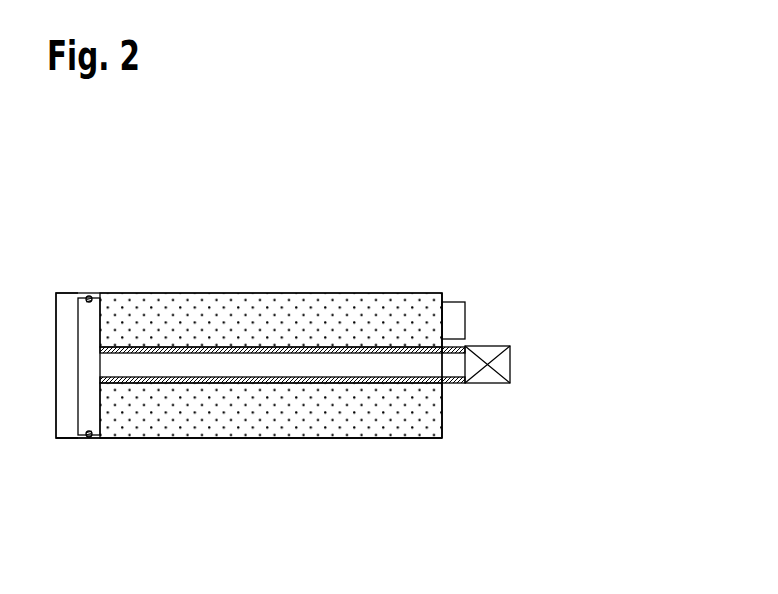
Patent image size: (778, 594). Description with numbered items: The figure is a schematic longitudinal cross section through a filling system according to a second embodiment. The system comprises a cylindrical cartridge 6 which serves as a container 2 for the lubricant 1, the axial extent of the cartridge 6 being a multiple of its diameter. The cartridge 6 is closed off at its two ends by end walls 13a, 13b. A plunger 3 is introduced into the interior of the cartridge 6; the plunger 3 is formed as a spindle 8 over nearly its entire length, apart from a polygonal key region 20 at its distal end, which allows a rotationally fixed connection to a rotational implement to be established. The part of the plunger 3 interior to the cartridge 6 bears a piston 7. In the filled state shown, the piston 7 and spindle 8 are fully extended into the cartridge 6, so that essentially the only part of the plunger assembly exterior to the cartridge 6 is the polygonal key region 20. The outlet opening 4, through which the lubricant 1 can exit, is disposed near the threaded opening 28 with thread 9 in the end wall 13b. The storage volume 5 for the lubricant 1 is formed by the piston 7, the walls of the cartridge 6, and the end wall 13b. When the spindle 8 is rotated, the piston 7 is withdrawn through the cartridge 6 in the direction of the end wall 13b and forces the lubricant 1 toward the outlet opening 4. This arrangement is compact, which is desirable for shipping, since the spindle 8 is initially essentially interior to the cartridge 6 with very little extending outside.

The lubricant 1 is at (268, 420).
The container 2 is at (240, 246).
The plunger 3 is at (494, 320).
The outlet opening 4 is at (452, 302).
The storage volume 5 is at (357, 413).
The cartridge 6 is at (220, 440).
The piston 7 is at (75, 317).
The spindle 8 is at (155, 370).
The thread 9 is at (447, 385).
The end wall 13a is at (56, 395).
The end wall 13b is at (445, 423).
The polygonal key region 20 is at (512, 346).
The threaded opening 28 is at (463, 343).